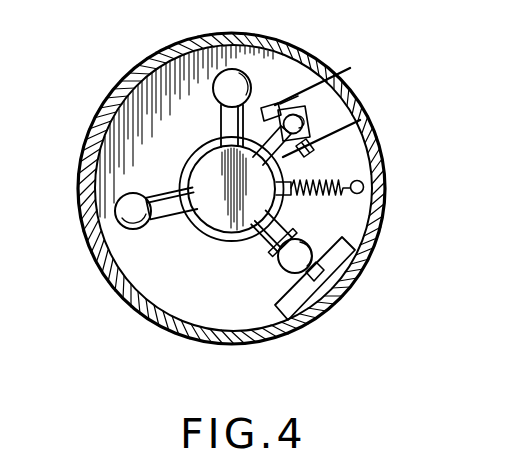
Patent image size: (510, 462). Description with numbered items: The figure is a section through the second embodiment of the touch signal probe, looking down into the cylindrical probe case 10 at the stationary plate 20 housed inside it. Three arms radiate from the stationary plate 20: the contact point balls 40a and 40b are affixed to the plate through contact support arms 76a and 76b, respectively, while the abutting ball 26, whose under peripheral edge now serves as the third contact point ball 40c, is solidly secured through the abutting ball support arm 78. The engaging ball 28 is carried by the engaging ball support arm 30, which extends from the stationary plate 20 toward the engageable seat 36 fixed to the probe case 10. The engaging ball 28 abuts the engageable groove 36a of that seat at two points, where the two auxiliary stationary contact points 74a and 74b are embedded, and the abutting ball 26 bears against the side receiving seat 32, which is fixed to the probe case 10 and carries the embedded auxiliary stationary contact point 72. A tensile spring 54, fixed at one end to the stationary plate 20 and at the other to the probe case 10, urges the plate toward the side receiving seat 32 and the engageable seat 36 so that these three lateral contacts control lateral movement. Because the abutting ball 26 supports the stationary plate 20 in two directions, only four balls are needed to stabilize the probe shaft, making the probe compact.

The probe case 10 is at (167, 48).
The stationary plate 20 is at (203, 176).
The abutting ball 26 is at (244, 276).
The contact point ball 40c is at (281, 268).
The engaging ball 28 is at (267, 106).
The engaging ball support arm 30 is at (285, 144).
The side receiving seat 32 is at (344, 265).
The engageable seat 36 is at (322, 107).
The engageable groove 36a is at (312, 150).
The contact point ball 40a is at (135, 230).
The contact point ball 40b is at (211, 91).
The tensile spring 54 is at (321, 197).
The auxiliary stationary contact point 72 is at (318, 288).
The auxiliary stationary contact point 74a is at (295, 102).
The auxiliary stationary contact point 74b is at (345, 128).
The contact support arm 76a is at (171, 216).
The contact support arm 76b is at (222, 126).
The abutting ball support arm 78 is at (268, 240).